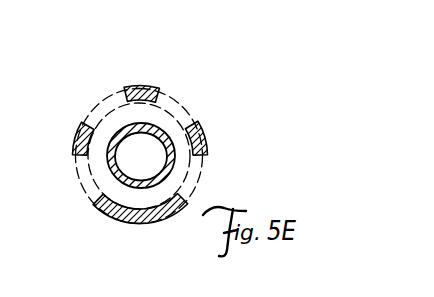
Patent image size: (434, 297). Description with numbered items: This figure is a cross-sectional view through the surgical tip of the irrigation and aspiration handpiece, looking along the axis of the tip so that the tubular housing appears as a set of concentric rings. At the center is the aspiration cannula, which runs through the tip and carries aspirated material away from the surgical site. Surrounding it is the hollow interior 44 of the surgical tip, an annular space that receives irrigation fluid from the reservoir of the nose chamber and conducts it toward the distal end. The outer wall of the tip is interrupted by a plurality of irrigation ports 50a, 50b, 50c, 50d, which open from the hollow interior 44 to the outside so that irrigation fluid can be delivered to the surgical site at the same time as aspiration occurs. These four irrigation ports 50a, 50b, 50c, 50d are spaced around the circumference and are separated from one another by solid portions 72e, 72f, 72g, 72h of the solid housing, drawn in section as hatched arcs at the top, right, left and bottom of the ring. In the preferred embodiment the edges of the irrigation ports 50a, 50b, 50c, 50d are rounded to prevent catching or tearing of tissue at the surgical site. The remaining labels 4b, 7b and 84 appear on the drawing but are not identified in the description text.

The inner tubular member 4b is at (164, 127).
The inner layer 44 is at (117, 107).
The outer layer portion 50a is at (200, 185).
The outer layer portion 50b is at (178, 100).
The outer layer portion 50c is at (118, 99).
The outer layer portion 50d is at (88, 194).
The outer sheath 84 is at (156, 137).
The tube segment 72e is at (199, 124).
The tube segment 72f is at (137, 86).
The tube segment 72g is at (75, 143).
The tube segment 72h is at (140, 224).
The tube 7b is at (163, 139).